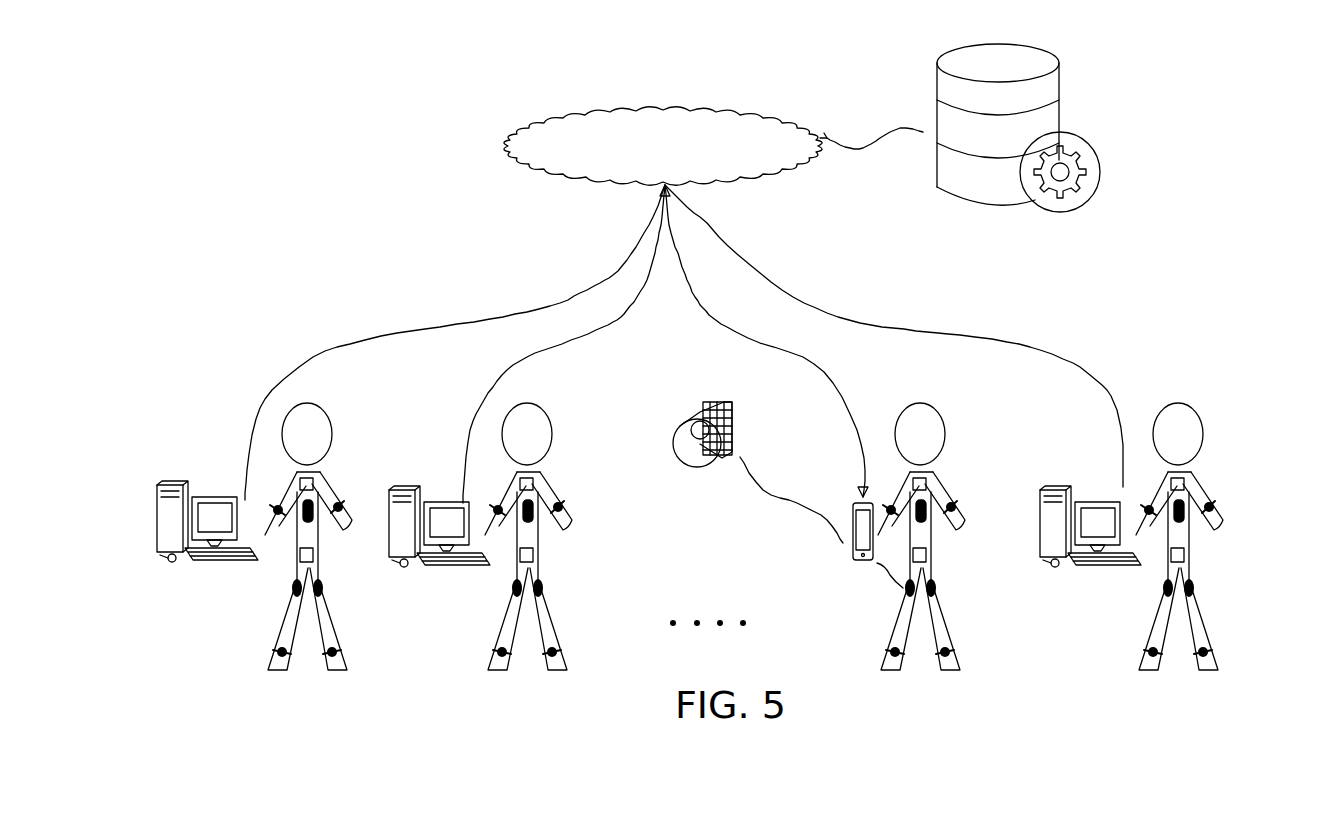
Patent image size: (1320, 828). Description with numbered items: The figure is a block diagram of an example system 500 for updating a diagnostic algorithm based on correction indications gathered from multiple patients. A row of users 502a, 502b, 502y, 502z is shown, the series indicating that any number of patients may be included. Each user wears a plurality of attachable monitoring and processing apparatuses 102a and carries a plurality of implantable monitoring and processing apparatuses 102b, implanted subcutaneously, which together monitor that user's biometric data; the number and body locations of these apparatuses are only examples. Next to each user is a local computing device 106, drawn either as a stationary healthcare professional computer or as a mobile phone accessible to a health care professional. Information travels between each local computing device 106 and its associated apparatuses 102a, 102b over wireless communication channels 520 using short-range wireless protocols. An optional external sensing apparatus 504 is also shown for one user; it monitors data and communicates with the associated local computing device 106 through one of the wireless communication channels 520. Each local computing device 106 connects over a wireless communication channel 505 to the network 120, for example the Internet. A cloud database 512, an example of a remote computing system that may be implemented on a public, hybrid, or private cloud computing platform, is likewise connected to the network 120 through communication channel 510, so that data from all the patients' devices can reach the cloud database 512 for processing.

The system 500 is at (663, 48).
The network 120 is at (663, 146).
The cloud database 512 is at (1070, 90).
The communication channel 510 is at (870, 114).
The wireless communication channel 505 is at (548, 275).
The external sensing apparatus 504 is at (690, 395).
The wireless communication channels 520 is at (788, 508).
The user 502a is at (280, 549).
The user 502b is at (493, 549).
The user 502y is at (890, 549).
The user 502z is at (1149, 549).
The local computing device 106 is at (232, 487).
The implantable monitoring and processing apparatus 102b is at (318, 475).
The attachable monitoring and processing apparatus 102a is at (322, 583).